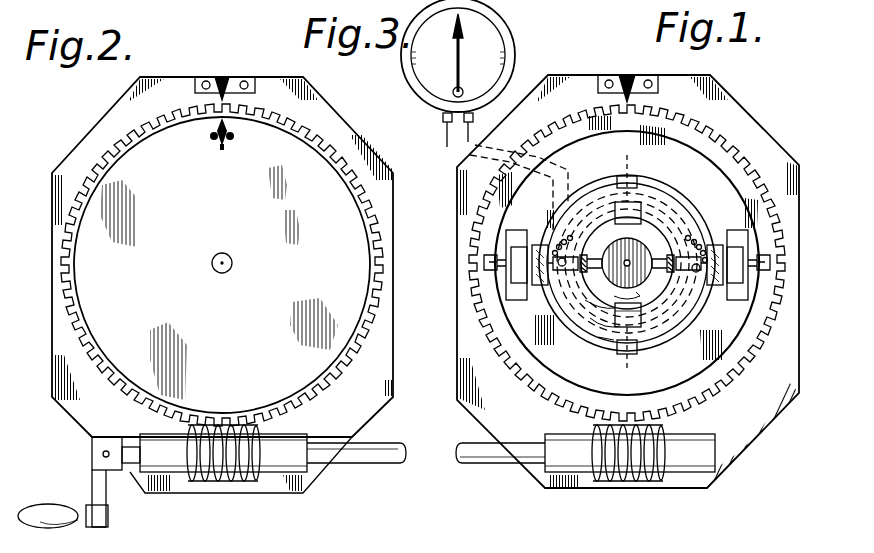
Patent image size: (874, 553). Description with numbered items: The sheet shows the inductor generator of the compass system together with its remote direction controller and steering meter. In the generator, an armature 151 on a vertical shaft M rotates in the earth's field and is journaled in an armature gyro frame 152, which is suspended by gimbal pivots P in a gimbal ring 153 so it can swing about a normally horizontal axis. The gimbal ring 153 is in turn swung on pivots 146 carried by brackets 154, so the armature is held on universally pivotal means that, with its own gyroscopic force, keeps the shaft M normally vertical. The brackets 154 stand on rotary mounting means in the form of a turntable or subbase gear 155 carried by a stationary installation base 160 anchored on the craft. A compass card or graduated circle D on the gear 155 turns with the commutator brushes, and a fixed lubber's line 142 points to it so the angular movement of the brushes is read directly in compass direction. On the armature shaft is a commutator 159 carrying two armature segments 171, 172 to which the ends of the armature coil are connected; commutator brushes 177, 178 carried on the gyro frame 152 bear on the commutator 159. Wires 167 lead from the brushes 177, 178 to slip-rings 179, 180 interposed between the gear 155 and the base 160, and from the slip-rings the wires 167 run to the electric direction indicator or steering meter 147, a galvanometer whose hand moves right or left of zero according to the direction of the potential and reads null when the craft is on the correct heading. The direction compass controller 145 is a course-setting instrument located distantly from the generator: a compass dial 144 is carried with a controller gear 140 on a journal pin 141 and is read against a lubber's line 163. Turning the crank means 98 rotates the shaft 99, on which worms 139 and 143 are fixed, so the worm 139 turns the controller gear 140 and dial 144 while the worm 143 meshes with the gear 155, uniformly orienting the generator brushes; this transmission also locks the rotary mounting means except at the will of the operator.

In FIG. 2, the manually operable crank means 98 is at (55, 512).
In FIG. 2, the controller shaft 99 is at (356, 463).
In FIG. 1, the controller shaft 99 is at (466, 463).
In FIG. 2, the controller worm gear 139 is at (210, 485).
In FIG. 2, the controller gear 140 is at (66, 244).
In FIG. 2, the journal pin 141 is at (233, 261).
In FIG. 1, the lubber's line 142 is at (627, 84).
In FIG. 1, the drive pinion or worm 143 is at (612, 476).
In FIG. 2, the compass dial 144 is at (110, 310).
In FIG. 2, the direction compass controller 145 is at (86, 378).
In FIG. 1, the gimbal pivots 146 is at (506, 262).
In FIG. 3, the electric direction indicator or steering meter 147 is at (500, 52).
In FIG. 1, the armature 151 is at (662, 235).
In FIG. 1, the armature gyro frame 152 is at (641, 212).
In FIG. 1, the gimbal ring 153 is at (686, 158).
In FIG. 1, the brackets 154 is at (522, 290).
In FIG. 1, the turntable gear or subbase gear 155 is at (486, 338).
In FIG. 1, the commutator 159 is at (668, 222).
In FIG. 1, the stationary installation base or frame 160 is at (458, 403).
In FIG. 2, the lubber's line 163 is at (223, 78).
In FIG. 3, the wires 167 is at (469, 133).
In FIG. 1, the wires 167 is at (519, 187).
In FIG. 1, the armature segment 171 is at (588, 304).
In FIG. 1, the armature segment 172 is at (693, 326).
In FIG. 1, the commutator brush 177 is at (690, 326).
In FIG. 1, the commutator brush 178 is at (553, 303).
In FIG. 1, the slip-ring 179 is at (597, 320).
In FIG. 1, the slip-ring 180 is at (600, 340).
In FIG. 1, the compass card or graduated circle D is at (736, 176).
In FIG. 1, the vertical shaft M is at (607, 217).
In FIG. 1, the gimbal pivots P is at (627, 263).